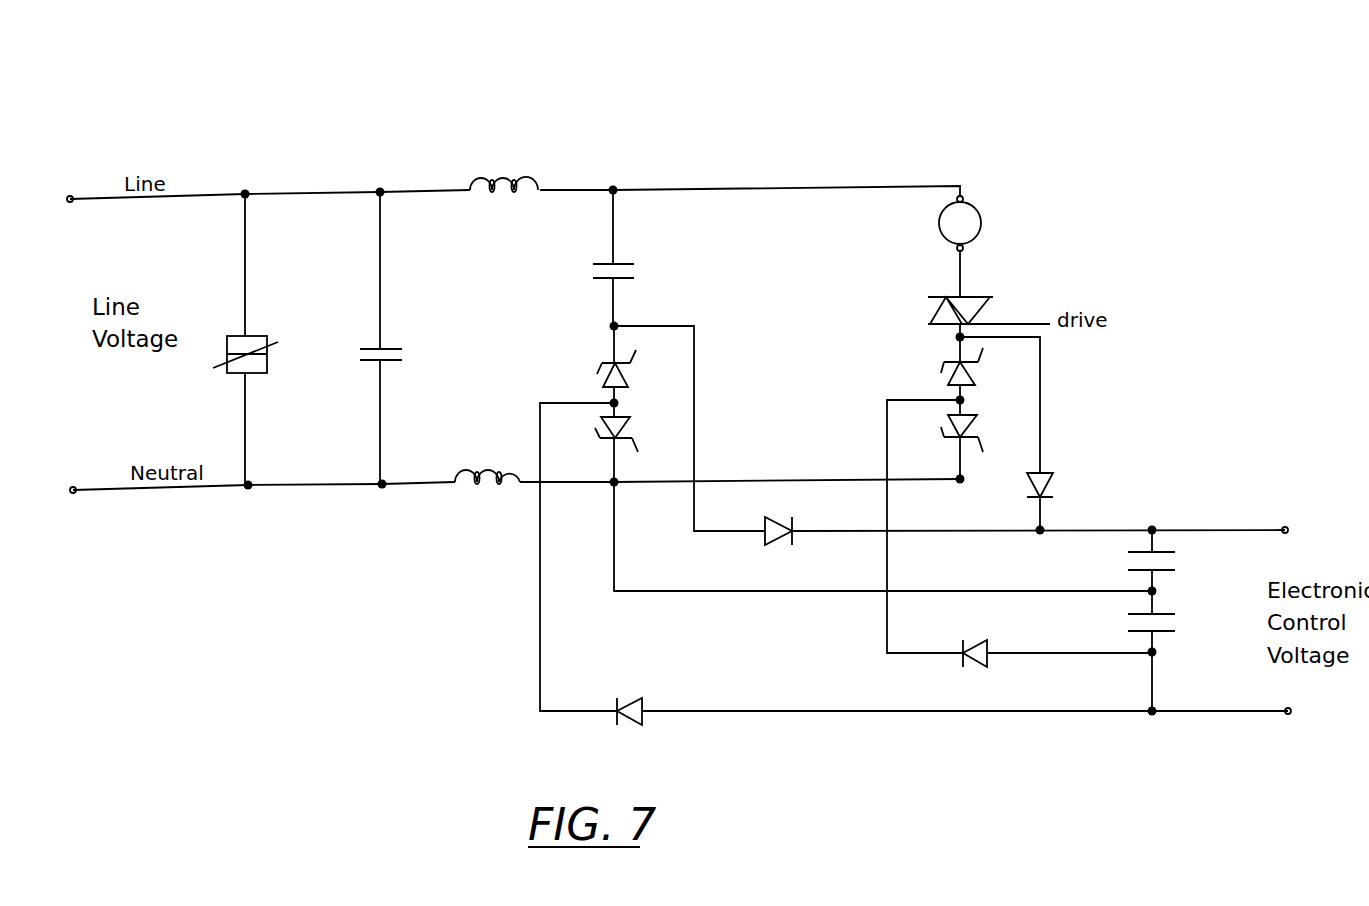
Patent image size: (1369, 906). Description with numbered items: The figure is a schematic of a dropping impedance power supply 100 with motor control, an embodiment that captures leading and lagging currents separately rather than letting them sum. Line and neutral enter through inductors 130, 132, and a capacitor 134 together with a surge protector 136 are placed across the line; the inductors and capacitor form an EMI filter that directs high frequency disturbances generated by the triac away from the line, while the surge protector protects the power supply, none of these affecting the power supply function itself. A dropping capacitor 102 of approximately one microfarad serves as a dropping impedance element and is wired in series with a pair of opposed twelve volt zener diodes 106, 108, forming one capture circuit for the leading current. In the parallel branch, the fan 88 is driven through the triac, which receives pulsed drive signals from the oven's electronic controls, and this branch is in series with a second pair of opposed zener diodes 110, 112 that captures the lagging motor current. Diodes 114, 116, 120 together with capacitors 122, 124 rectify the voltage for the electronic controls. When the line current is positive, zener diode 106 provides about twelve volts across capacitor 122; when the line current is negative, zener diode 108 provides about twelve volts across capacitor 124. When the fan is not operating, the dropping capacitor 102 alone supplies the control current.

The dropping impedance power supply 100 is at (983, 75).
The inductor 130 is at (495, 173).
The inductor 132 is at (490, 466).
The dropping capacitor 102 is at (630, 263).
The capacitor 134 is at (392, 348).
The surge protector 136 is at (253, 335).
The fan motor 88 is at (938, 223).
The zener diode 106 is at (603, 380).
The zener diode 108 is at (630, 418).
The zener diode 110 is at (950, 381).
The zener diode 112 is at (977, 418).
The diode 114 is at (770, 517).
The capacitor 122 is at (1130, 575).
The capacitor 124 is at (1130, 635).
The diode 120 is at (980, 640).
The diode 116 is at (636, 697).